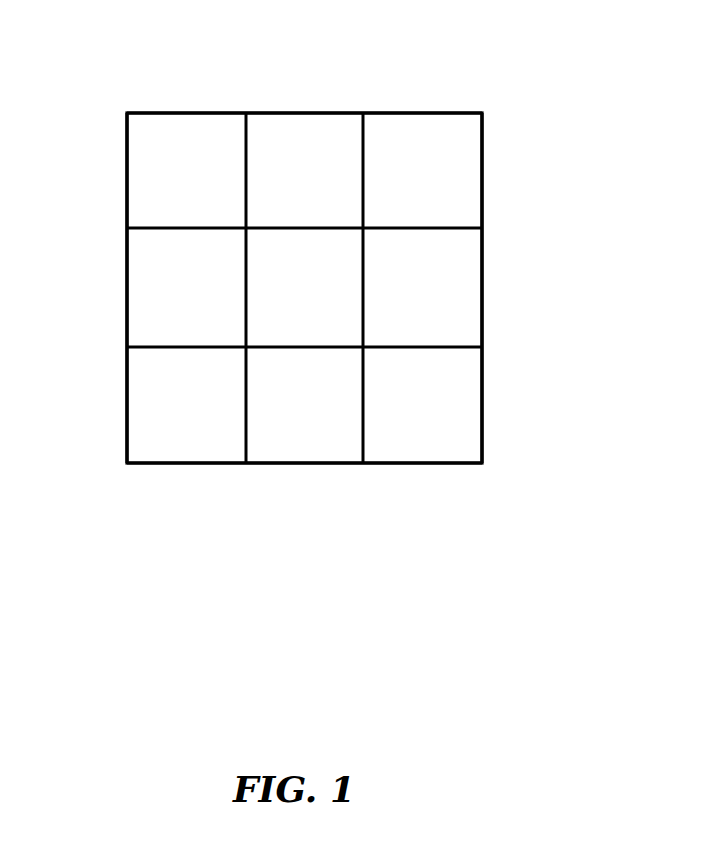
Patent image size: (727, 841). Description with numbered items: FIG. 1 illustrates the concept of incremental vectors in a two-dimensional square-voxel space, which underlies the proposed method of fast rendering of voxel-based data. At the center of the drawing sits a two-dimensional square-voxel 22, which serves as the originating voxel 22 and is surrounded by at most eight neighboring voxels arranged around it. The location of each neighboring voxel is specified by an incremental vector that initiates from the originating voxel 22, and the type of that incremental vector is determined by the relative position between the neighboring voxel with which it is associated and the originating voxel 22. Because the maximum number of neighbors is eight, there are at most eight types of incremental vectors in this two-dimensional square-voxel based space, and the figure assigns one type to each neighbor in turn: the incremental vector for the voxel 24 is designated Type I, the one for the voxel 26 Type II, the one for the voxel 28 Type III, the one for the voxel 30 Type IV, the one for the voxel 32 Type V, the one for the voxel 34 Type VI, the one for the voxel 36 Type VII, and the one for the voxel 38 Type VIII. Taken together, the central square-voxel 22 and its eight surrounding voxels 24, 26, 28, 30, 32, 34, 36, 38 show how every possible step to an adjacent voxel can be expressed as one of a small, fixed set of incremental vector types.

The 2-D square-voxel 22 is at (294, 305).
The voxel 24 is at (190, 113).
The voxel 26 is at (302, 113).
The voxel 28 is at (421, 113).
The voxel 30 is at (482, 290).
The voxel 32 is at (415, 464).
The voxel 34 is at (307, 464).
The voxel 36 is at (183, 464).
The voxel 38 is at (127, 297).